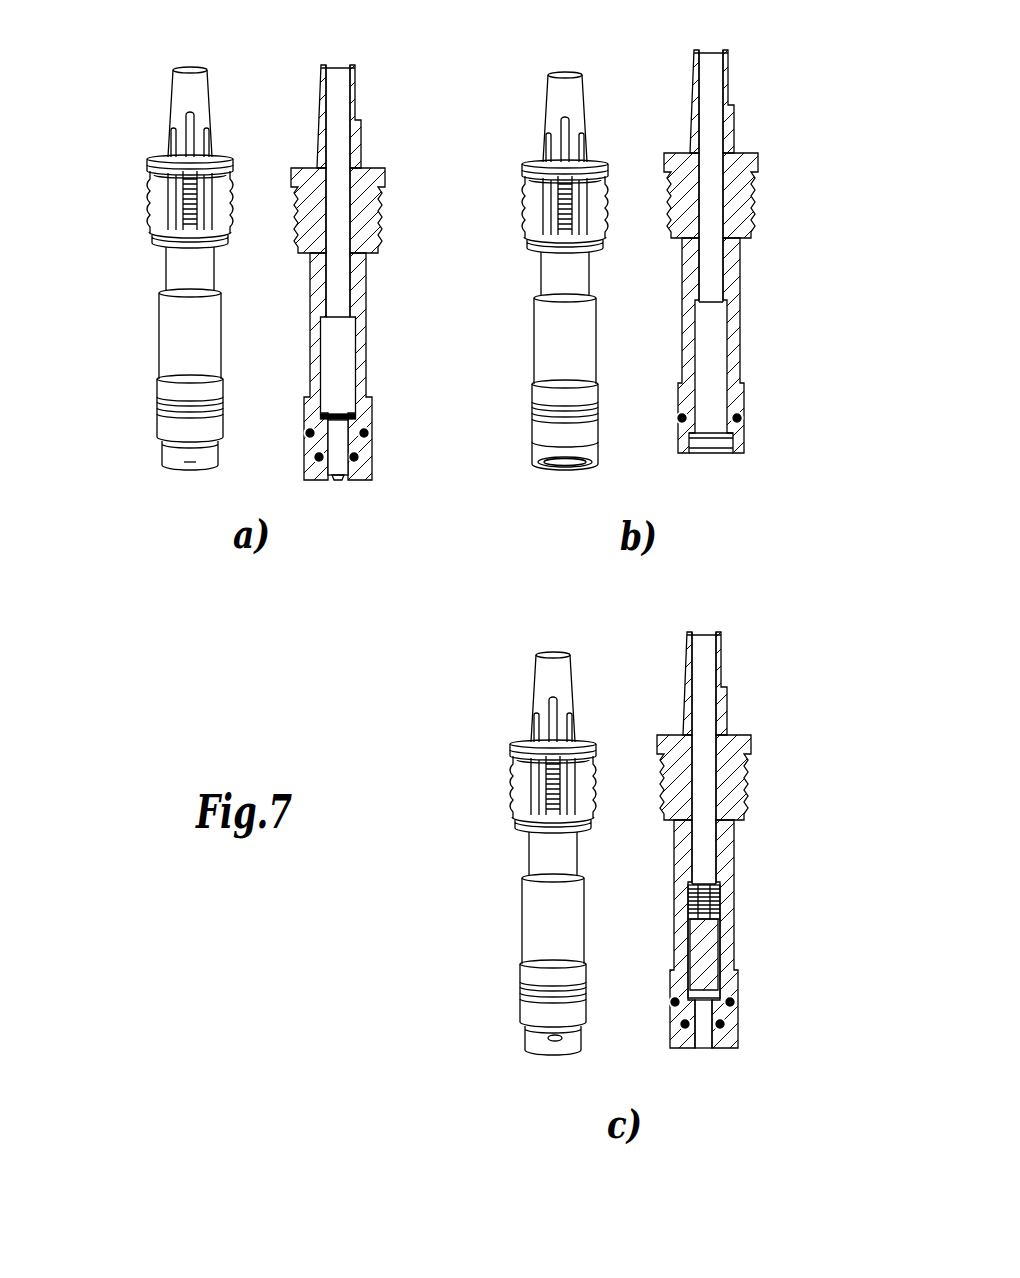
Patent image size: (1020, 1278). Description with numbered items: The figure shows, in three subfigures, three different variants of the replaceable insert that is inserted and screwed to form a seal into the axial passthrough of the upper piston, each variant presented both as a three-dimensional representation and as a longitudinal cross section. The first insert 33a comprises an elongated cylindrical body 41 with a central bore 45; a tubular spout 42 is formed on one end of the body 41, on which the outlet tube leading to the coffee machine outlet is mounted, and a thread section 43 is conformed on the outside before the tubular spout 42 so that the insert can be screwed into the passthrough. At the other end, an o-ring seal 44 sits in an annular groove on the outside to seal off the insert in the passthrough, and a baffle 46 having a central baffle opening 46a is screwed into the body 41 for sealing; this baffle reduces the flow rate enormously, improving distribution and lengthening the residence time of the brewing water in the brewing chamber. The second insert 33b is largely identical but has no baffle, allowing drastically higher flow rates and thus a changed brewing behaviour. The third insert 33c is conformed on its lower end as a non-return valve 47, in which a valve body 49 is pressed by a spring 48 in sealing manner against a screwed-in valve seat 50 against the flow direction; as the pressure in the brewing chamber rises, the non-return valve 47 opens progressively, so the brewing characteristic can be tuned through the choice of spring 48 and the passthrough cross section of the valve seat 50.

The replaceable insert 33a is at (288, 29).
The replaceable insert 33b is at (652, 39).
The replaceable insert 33c is at (656, 647).
The body 41 is at (175, 342).
The tubular spout 42 is at (183, 107).
The threaded connector nut 43 is at (160, 222).
The O-ring seals 44 is at (165, 415).
The central bore 45 is at (338, 283).
The baffle 46 is at (175, 465).
The central baffle opening 46a is at (190, 462).
The non-return valve 47 is at (718, 957).
The spring 48 is at (695, 903).
The valve body 49 is at (695, 955).
The valve seat 50 is at (715, 1048).